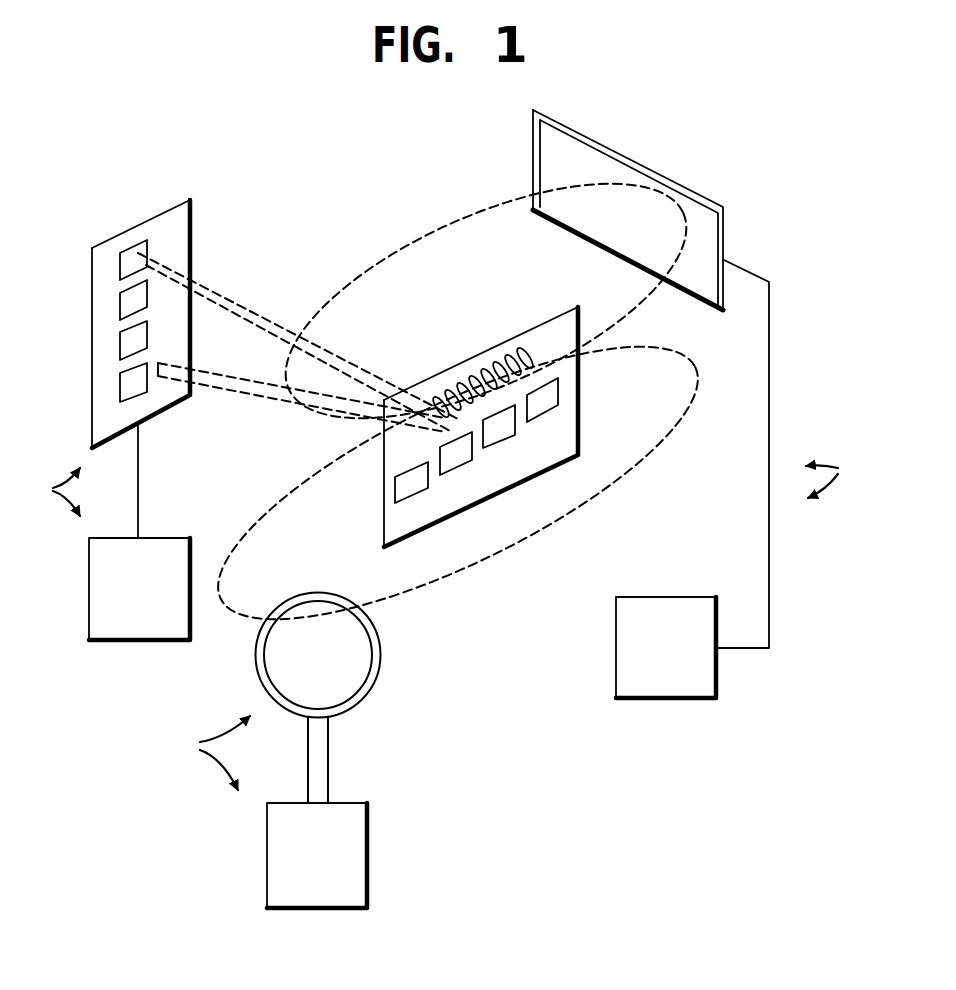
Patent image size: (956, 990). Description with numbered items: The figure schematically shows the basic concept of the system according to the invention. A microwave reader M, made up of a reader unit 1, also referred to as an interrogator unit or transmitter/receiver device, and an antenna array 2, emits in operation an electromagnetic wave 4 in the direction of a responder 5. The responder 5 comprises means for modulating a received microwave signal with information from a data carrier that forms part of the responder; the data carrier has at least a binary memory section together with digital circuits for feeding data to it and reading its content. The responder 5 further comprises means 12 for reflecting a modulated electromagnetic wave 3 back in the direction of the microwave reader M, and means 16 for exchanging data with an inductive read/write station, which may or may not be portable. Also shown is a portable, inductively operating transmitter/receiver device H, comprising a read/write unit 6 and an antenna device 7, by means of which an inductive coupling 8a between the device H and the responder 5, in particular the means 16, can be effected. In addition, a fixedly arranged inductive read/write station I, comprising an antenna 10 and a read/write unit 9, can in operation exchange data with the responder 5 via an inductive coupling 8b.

The reader unit 1 is at (109, 642).
The antenna array 2 is at (165, 221).
The modulated electromagnetic wave 3 is at (220, 283).
The electromagnetic wave 4 is at (227, 393).
The responder 5 is at (515, 410).
The read/write unit 6 is at (367, 855).
The antenna device 7 is at (380, 656).
The inductive coupling 8a is at (513, 547).
The inductive coupling 8b is at (455, 243).
The read/write unit 9 is at (665, 700).
The antenna 10 is at (617, 155).
The means for reflecting 12 is at (558, 388).
The means for exchanging data 16 is at (535, 352).
The microwave reader M is at (53, 492).
The portable inductively operating transmitter/receiver device H is at (211, 753).
The fixedly arranged inductive read/write station I is at (828, 475).